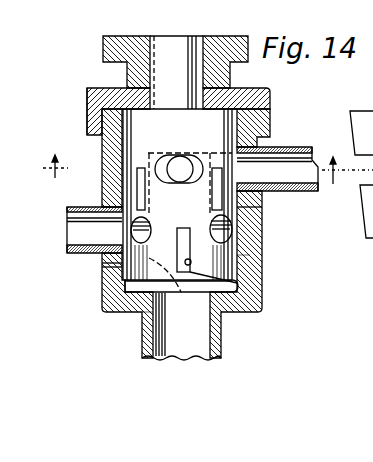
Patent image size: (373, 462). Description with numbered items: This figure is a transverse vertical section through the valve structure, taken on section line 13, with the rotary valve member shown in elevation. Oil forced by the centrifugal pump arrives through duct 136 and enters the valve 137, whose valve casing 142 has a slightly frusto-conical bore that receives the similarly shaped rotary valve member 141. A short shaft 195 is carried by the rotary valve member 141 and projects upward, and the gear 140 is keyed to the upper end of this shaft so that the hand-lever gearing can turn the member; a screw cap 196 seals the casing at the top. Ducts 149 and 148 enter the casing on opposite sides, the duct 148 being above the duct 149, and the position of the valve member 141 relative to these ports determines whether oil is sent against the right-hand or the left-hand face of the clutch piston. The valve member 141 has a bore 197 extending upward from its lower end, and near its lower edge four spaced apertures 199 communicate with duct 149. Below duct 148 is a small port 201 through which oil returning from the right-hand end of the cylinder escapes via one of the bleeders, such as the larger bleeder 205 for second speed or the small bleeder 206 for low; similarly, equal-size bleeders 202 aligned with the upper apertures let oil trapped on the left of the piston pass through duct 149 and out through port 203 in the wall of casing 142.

The line 13— 13 is at (208, 162).
The duct 136 is at (191, 355).
The valve 137 is at (279, 107).
The gear 140 is at (216, 38).
The rotary valve member 141 is at (184, 209).
The valve casing 142 is at (252, 240).
The duct 148 is at (291, 146).
The duct 149 is at (83, 255).
The short shaft 195 is at (175, 72).
The screw cap 196 is at (87, 94).
The bore 197 is at (181, 298).
The apertures 199 is at (252, 256).
The port 201 is at (258, 208).
The bleeders 202 is at (252, 290).
The port 203 is at (103, 268).
The bleeder 205 is at (138, 190).
The bleeder 206 is at (212, 200).